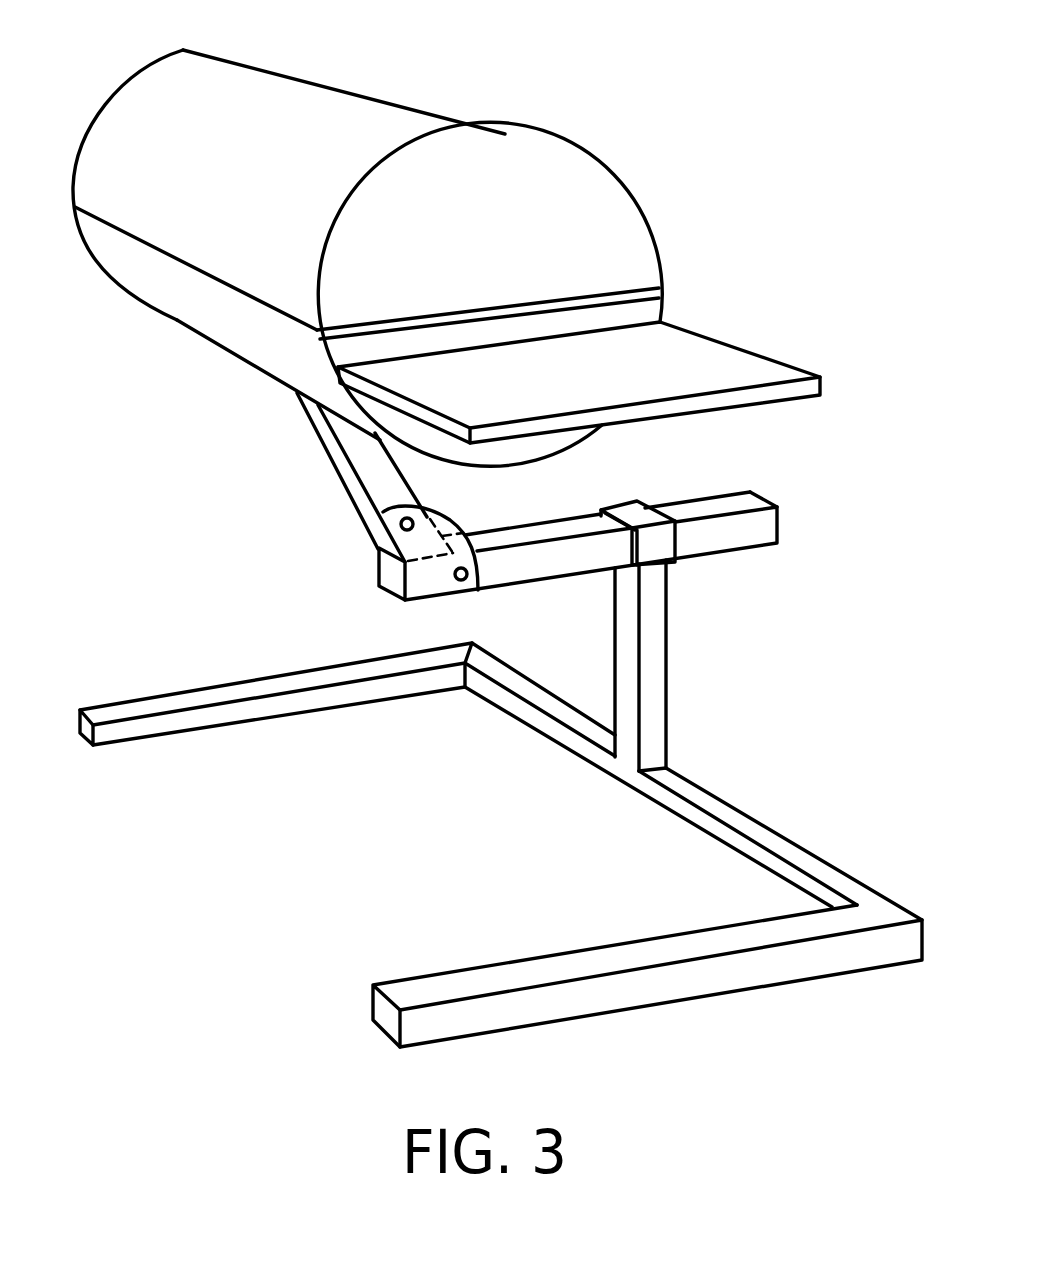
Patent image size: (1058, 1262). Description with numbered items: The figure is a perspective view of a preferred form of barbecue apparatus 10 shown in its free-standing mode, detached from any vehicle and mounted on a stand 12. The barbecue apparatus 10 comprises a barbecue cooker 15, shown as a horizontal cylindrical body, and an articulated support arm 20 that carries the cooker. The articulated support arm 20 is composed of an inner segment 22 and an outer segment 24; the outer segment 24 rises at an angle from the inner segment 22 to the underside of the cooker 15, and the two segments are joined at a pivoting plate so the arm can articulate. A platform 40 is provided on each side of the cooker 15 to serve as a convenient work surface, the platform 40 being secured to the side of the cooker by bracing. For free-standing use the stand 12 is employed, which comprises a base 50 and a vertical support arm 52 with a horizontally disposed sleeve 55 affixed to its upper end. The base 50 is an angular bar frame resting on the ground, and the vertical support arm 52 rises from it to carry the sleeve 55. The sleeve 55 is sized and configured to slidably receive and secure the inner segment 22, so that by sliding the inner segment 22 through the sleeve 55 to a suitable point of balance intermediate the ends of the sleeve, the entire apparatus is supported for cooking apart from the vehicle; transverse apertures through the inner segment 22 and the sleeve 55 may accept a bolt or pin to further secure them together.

The barbecue apparatus 10 is at (497, 548).
The stand 12 is at (501, 803).
The barbecue cooker 15 is at (183, 307).
The articulated support arm 20 is at (529, 515).
The inner segment 22 is at (557, 562).
The outer segment 24 is at (368, 456).
The platform 40 is at (722, 360).
The base 50 is at (693, 817).
The vertical support arm 52 is at (655, 705).
The sleeve 55 is at (667, 548).